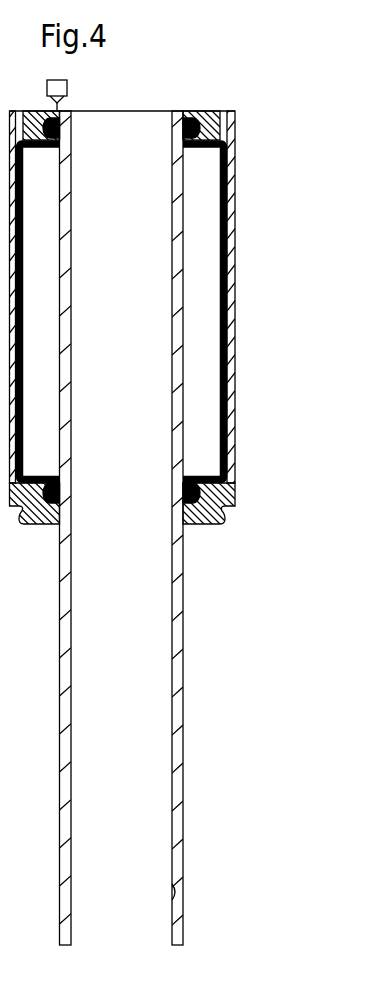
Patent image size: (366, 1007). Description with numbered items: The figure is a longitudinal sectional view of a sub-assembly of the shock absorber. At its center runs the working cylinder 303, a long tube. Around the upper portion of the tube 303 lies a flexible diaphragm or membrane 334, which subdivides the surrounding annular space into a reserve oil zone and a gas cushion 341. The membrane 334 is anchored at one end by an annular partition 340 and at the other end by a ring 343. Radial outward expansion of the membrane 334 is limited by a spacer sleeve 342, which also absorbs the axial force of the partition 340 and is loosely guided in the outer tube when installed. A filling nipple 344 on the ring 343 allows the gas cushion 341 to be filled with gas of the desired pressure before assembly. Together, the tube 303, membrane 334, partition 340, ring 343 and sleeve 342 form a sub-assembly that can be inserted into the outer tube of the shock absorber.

The working cylinder 303 is at (175, 723).
The flexible diaphragm 334 is at (230, 268).
The annular partition 340 is at (225, 506).
The gas cushion 341 is at (203, 235).
The spacer sleeve 342 is at (230, 323).
The ring 343 is at (217, 113).
The filling nipple 344 is at (62, 88).